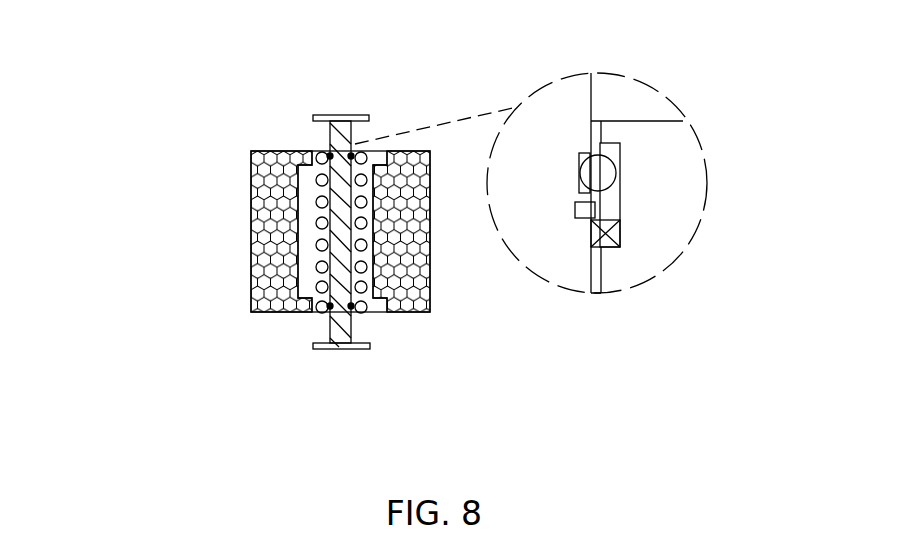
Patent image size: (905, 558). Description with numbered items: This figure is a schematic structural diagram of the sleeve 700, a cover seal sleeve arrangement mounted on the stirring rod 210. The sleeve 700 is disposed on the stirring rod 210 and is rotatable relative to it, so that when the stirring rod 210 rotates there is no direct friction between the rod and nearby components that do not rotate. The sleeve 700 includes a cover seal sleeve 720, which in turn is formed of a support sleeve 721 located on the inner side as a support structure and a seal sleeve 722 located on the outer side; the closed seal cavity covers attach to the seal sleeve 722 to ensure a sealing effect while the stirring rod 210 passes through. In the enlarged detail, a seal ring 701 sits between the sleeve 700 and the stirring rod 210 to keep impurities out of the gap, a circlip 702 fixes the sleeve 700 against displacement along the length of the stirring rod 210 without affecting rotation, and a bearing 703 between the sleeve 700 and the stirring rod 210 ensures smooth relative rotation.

The sleeve 700 is at (130, 90).
The stirring rod 210 is at (333, 330).
The cover seal sleeve 720 is at (197, 92).
The support sleeve 721 is at (272, 155).
The seal sleeve 722 is at (312, 155).
The seal ring 701 is at (605, 180).
The circlip 702 is at (587, 213).
The bearing 703 is at (603, 233).